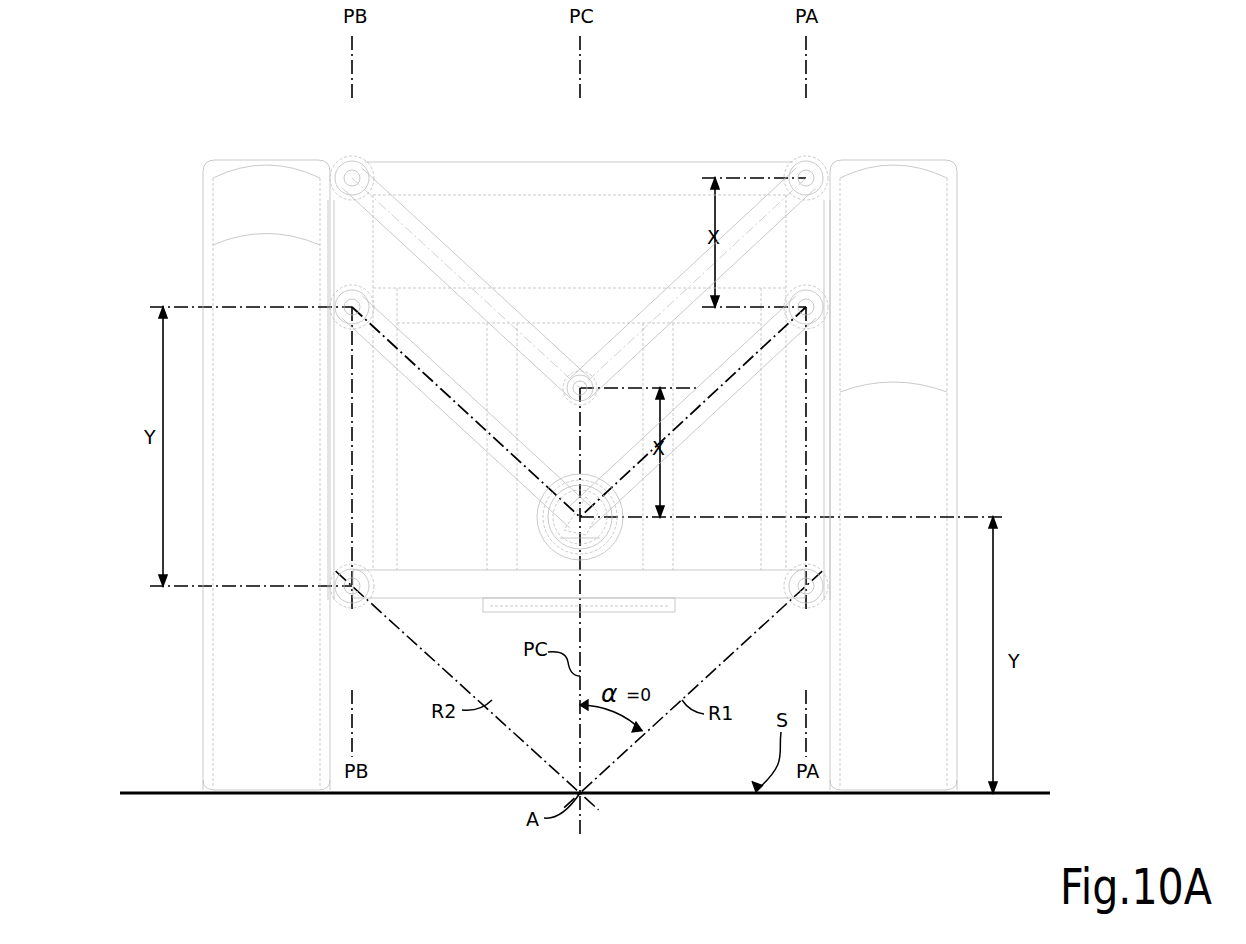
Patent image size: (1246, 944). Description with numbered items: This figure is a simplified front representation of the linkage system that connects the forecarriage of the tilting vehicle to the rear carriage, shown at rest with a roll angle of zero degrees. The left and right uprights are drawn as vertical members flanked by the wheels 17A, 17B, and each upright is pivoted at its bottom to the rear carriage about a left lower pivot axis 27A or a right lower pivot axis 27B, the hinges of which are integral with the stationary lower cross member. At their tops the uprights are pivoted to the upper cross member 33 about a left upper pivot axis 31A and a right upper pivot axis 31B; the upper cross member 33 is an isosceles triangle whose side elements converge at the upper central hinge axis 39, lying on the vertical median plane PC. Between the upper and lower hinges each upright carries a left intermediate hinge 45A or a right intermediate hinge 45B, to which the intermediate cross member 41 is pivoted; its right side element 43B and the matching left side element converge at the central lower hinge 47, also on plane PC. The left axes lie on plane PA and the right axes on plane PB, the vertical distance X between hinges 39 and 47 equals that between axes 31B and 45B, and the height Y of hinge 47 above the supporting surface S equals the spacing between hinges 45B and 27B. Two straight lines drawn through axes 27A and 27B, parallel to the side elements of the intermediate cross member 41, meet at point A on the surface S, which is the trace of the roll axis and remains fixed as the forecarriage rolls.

The wheel 17A is at (934, 277).
The wheel 17B is at (220, 277).
The left lower pivot axis 27A is at (806, 588).
The right lower pivot axis 27B is at (352, 588).
The left upper pivot axis 31A is at (809, 177).
The right upper pivot axis 31B is at (349, 177).
The upper cross member 33 is at (750, 194).
The upper central hinge axis 39 is at (582, 386).
The intermediate cross member 41 is at (730, 338).
The right side element 43B is at (454, 420).
The left intermediate hinge 45A is at (806, 310).
The right intermediate hinge 45B is at (354, 310).
The central lower hinge 47 is at (580, 517).